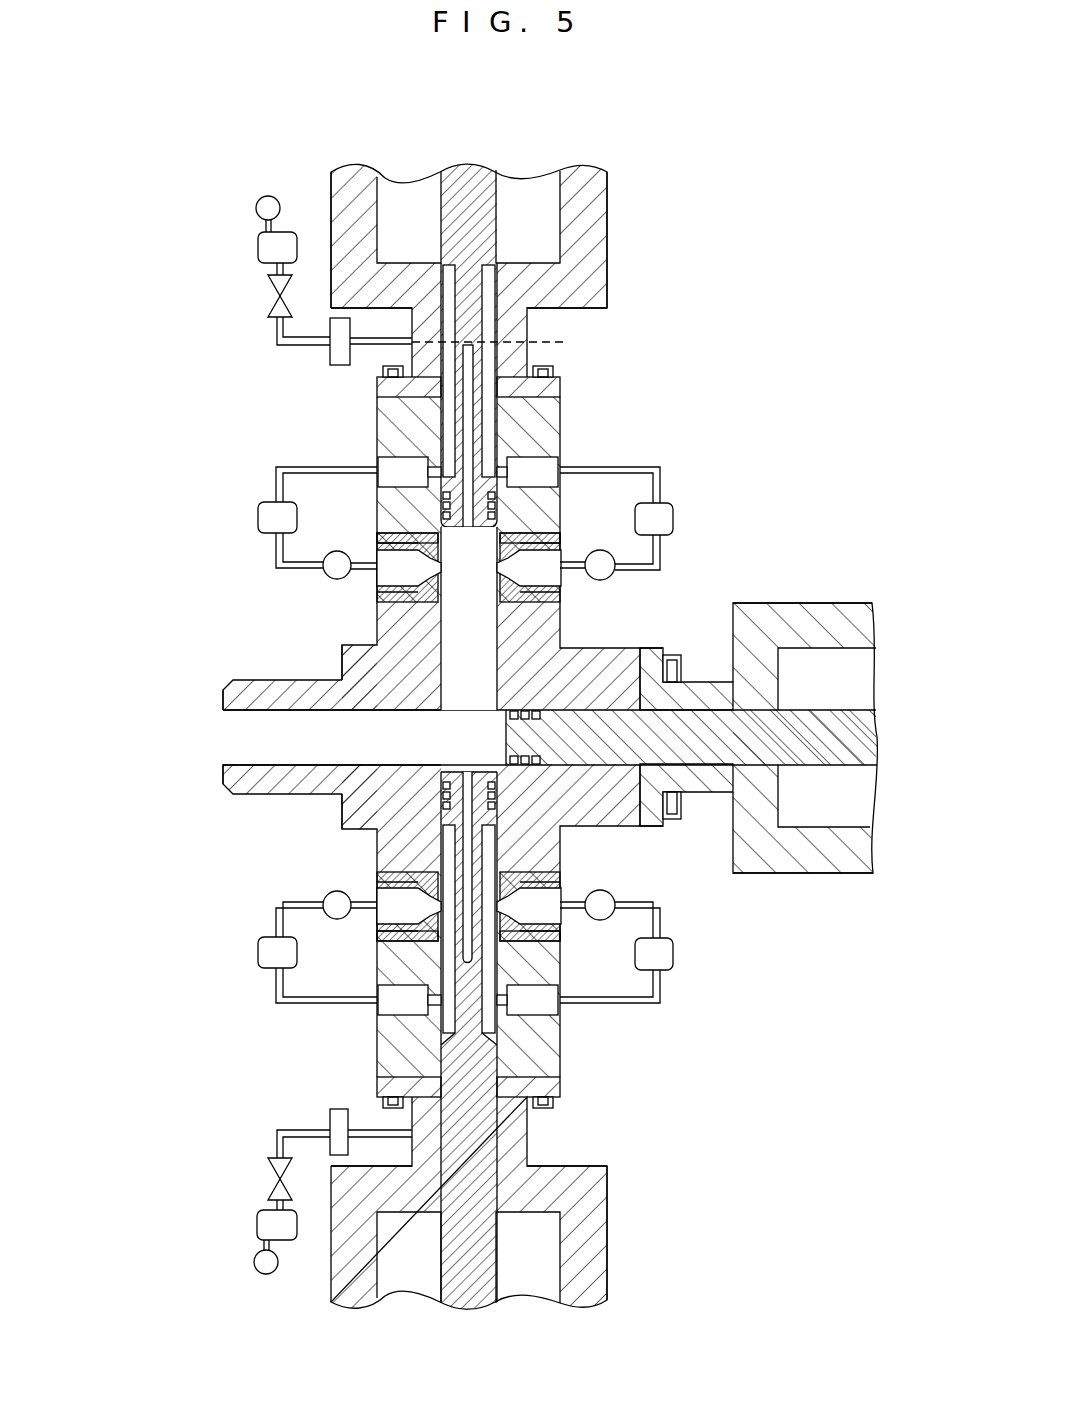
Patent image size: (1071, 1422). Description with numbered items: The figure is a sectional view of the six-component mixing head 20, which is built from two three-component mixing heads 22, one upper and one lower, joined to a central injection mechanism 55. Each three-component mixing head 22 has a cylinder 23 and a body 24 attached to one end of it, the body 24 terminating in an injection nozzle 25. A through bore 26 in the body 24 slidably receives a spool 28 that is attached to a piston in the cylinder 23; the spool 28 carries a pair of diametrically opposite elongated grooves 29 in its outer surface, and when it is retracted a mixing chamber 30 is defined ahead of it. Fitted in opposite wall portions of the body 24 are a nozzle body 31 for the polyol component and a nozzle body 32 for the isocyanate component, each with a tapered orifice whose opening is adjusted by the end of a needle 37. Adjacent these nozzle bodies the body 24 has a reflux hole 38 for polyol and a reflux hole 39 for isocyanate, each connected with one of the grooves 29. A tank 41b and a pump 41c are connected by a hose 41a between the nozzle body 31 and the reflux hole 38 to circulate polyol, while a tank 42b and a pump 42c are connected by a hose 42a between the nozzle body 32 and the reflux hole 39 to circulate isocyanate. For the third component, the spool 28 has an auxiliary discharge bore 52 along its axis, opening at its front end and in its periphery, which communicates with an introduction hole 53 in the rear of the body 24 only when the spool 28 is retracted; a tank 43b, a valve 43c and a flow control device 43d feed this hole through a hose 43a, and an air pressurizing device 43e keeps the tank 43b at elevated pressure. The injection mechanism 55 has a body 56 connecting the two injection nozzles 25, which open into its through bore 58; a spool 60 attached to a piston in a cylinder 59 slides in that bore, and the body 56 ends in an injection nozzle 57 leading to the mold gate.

The six-component mixing head 20 is at (622, 184).
The three-component mixing head 22 is at (326, 162).
The cylinder 23 is at (600, 223).
The body 24 is at (378, 416).
The injection nozzle 25 is at (382, 617).
The through bore 26 is at (556, 644).
The spool 28 is at (468, 178).
The elongated grooves 29 is at (548, 390).
The mixing chamber 30 is at (468, 580).
The nozzle body for the polyol component 31 is at (380, 533).
The nozzle body for the isocyanate component 32 is at (555, 533).
The needle 37 is at (383, 565).
The reflux hole for the polyol component 38 is at (384, 463).
The reflux hole for the isocyanate component 39 is at (552, 463).
The hose 41a is at (276, 472).
The tank 41b is at (258, 518).
The pump 41c is at (326, 569).
The hose 42a is at (660, 478).
The tank 42b is at (673, 517).
The pump 42c is at (606, 577).
The hose 43a is at (277, 339).
The tank 43b is at (258, 248).
The valve 43c is at (268, 303).
The flow control device 43d is at (332, 356).
The air pressurizing device 43e is at (256, 207).
The auxiliary discharge bore 52 is at (497, 406).
The introduction hole 53 is at (508, 338).
The injection mechanism 55 is at (212, 668).
The body 56 is at (348, 660).
The injection nozzle 57 is at (247, 688).
The through bore 58 is at (245, 739).
The cylinder 59 is at (835, 610).
The spool 60 is at (510, 739).